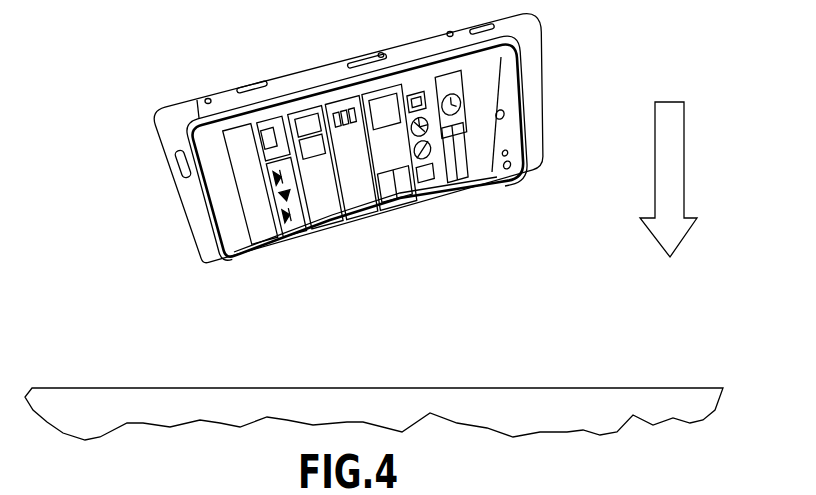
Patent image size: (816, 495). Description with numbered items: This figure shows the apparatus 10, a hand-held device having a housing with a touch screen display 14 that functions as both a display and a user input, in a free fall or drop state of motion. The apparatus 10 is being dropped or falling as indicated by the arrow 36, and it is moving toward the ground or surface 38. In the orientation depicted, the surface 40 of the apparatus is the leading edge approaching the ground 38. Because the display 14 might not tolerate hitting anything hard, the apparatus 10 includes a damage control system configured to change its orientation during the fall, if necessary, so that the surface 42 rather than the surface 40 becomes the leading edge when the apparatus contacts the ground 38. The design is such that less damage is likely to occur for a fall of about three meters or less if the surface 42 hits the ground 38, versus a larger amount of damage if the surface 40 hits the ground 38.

The apparatus 10 is at (283, 82).
The touch screen display 14 is at (343, 113).
The arrow 36 is at (686, 160).
The ground or surface 38 is at (96, 388).
The surface 40 is at (258, 260).
The surface 42 is at (178, 197).